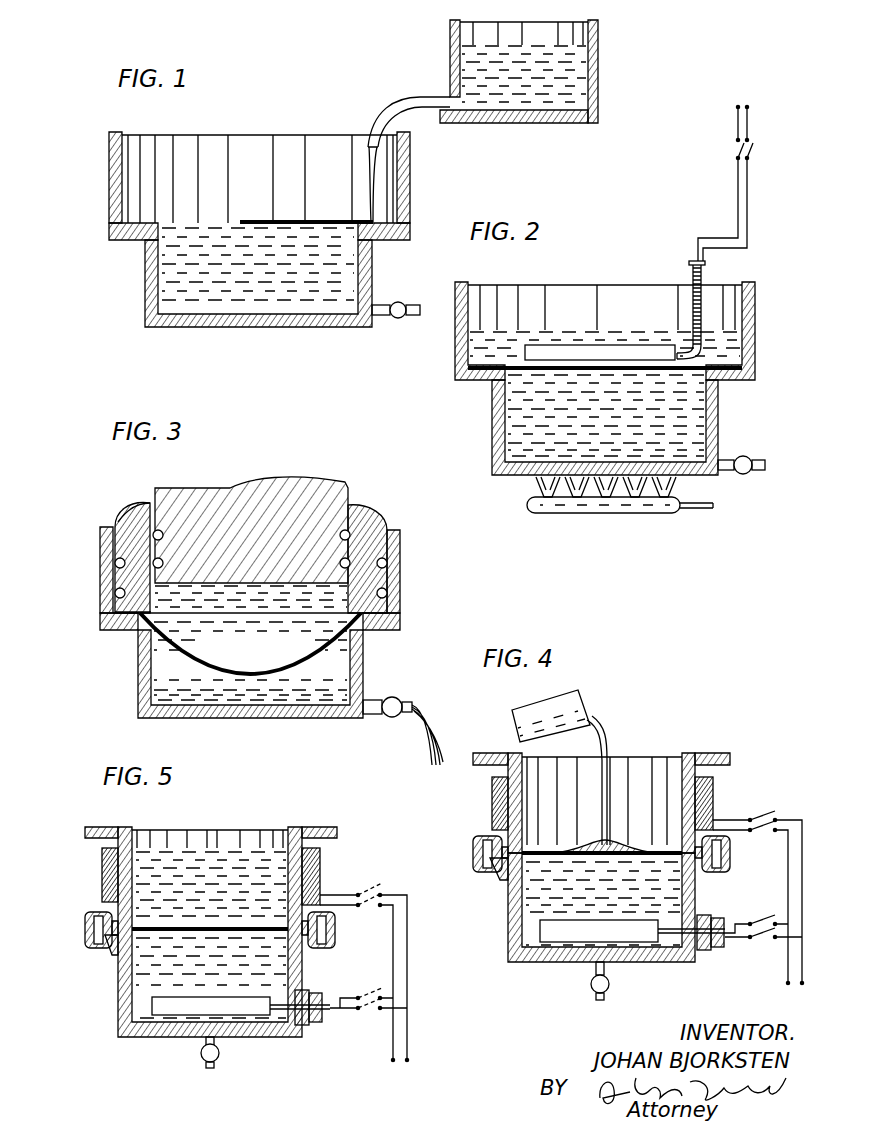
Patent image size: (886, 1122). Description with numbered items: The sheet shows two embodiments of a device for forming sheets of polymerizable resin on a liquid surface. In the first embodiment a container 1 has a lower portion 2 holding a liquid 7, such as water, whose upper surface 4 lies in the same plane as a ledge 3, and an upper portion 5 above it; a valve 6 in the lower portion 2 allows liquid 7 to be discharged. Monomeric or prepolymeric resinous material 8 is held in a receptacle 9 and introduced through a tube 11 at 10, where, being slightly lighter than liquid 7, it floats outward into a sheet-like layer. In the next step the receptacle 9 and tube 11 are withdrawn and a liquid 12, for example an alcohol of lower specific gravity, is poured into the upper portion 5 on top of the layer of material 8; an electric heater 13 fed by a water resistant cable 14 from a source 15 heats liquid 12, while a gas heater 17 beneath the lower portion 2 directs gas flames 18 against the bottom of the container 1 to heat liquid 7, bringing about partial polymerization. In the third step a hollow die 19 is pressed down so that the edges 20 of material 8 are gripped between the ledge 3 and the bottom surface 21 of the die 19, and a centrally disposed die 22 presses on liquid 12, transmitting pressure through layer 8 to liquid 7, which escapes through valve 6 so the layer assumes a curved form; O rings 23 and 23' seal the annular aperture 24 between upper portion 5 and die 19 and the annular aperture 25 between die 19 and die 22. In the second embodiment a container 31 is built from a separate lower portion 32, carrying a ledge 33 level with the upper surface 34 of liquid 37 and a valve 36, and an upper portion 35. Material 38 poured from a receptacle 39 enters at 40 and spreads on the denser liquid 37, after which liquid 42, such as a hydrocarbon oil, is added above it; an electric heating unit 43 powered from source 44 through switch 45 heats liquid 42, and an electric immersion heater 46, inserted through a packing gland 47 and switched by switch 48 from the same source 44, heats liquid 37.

In FIG. 1, the container 1 is at (93, 213).
In FIG. 1, the lower portion 2 is at (148, 275).
In FIG. 2, the lower portion 2 is at (710, 414).
In FIG. 3, the lower portion 2 is at (250, 674).
In FIG. 1, the ledge 3 is at (128, 232).
In FIG. 3, the ledge 3 is at (373, 628).
In FIG. 1, the upper surface 4 is at (222, 224).
In FIG. 1, the upper portion 5 is at (113, 143).
In FIG. 3, the upper portion 5 is at (392, 570).
In FIG. 1, the valve 6 is at (397, 301).
In FIG. 2, the valve 6 is at (741, 463).
In FIG. 3, the valve 6 is at (389, 698).
In FIG. 1, the liquid 7 is at (178, 300).
In FIG. 2, the liquid 7 is at (520, 432).
In FIG. 3, the liquid 7 is at (168, 685).
In FIG. 1, the monomeric liquid plastic 8 is at (455, 74).
In FIG. 2, the monomeric liquid plastic 8 is at (487, 373).
In FIG. 3, the monomeric liquid plastic 8 is at (280, 672).
In FIG. 1, the receptacle 9 is at (452, 40).
In FIG. 1, the introduction point 10 is at (366, 218).
In FIG. 1, the tube 11 is at (385, 120).
In FIG. 2, the liquid 12 is at (470, 343).
In FIG. 3, the liquid 12 is at (175, 643).
In FIG. 2, the electric heater 13 is at (660, 346).
In FIG. 2, the water resistant cable 14 is at (690, 278).
In FIG. 2, the source 15 is at (740, 158).
In FIG. 2, the gas heater 17 is at (530, 505).
In FIG. 2, the gas flames 18 is at (678, 488).
In FIG. 3, the hollow die 19 is at (372, 532).
In FIG. 3, the edges 20 is at (140, 618).
In FIG. 3, the bottom surface 21 is at (390, 600).
In FIG. 3, the centrally disposed die 22 is at (318, 505).
In FIG. 3, the O ring 23 is at (124, 550).
In FIG. 3, the O ring 23' is at (90, 565).
In FIG. 3, the annular aperture 24 is at (390, 556).
In FIG. 3, the annular aperture 25 is at (143, 505).
In FIG. 4, the container 31 is at (478, 822).
In FIG. 4, the lower portion 32 is at (510, 950).
In FIG. 4, the ledge 33 is at (505, 878).
In FIG. 5, the ledge 33 is at (210, 933).
In FIG. 4, the upper surface 34 is at (641, 852).
In FIG. 4, the upper portion 35 is at (686, 756).
In FIG. 5, the upper portion 35 is at (310, 828).
In FIG. 4, the valve 36 is at (591, 982).
In FIG. 5, the valve 36 is at (211, 1052).
In FIG. 4, the liquid 37 is at (540, 905).
In FIG. 5, the liquid 37 is at (140, 985).
In FIG. 4, the synthetic resinous material 38 is at (570, 728).
In FIG. 5, the synthetic resinous material 38 is at (265, 927).
In FIG. 4, the receptacle 39 is at (514, 712).
In FIG. 4, the introduction point 40 is at (610, 840).
In FIG. 5, the liquid 42 is at (182, 862).
In FIG. 5, the electric heating unit 43 is at (102, 858).
In FIG. 4, the source 44 is at (758, 898).
In FIG. 5, the source 44 is at (398, 1066).
In FIG. 5, the switch 45 is at (364, 893).
In FIG. 4, the electric immersion heater 46 is at (632, 932).
In FIG. 5, the electric immersion heater 46 is at (182, 1010).
In FIG. 5, the packing gland 47 is at (302, 994).
In FIG. 5, the switch 48 is at (366, 1012).